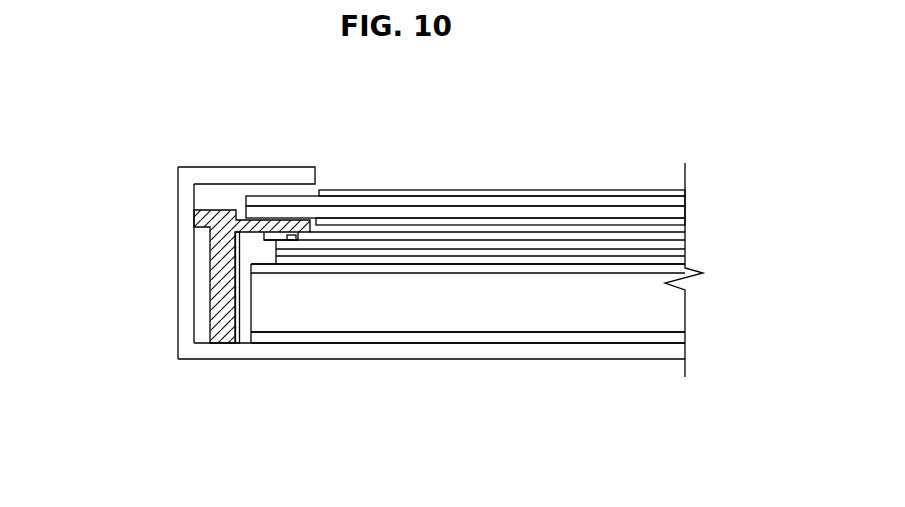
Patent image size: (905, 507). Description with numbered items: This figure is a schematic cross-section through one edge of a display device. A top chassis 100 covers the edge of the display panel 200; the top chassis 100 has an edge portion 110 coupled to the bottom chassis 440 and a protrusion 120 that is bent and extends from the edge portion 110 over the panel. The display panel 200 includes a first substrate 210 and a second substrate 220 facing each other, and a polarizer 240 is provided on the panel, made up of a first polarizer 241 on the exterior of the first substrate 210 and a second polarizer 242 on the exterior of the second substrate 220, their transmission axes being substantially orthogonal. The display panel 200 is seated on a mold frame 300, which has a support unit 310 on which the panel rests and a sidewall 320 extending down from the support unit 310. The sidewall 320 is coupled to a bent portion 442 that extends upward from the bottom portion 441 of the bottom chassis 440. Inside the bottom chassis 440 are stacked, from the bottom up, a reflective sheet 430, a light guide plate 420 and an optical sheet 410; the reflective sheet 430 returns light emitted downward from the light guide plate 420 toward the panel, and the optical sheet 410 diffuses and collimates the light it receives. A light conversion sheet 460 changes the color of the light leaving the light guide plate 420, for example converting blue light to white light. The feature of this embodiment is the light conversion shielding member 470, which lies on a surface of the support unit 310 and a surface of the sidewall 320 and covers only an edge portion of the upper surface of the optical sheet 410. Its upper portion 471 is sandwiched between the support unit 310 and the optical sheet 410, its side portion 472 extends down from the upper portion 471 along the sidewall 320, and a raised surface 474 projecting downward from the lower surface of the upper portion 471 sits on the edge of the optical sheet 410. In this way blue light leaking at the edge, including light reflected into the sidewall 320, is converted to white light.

The top chassis 100 is at (91, 220).
The edge portion 110 is at (190, 213).
The protrusion 120 is at (236, 176).
The display panel 200 is at (587, 119).
The first substrate 210 is at (585, 213).
The second substrate 220 is at (518, 203).
The polarizer 240 is at (428, 119).
The first polarizer 241 is at (430, 220).
The second polarizer 242 is at (360, 195).
The mold frame 300 is at (91, 248).
The support unit 310 is at (258, 227).
The sidewall 320 is at (223, 293).
The optical sheet 410 is at (697, 271).
The light guide plate 420 is at (664, 310).
The reflective sheet 430 is at (664, 345).
The bottom chassis 440 is at (91, 328).
The bottom portion 441 is at (241, 348).
The bent portion 442 is at (201, 319).
The light conversion sheet 460 is at (480, 268).
The light conversion shielding member 470 is at (371, 428).
The upper portion 471 is at (293, 240).
The side portion 472 is at (238, 246).
The raised surface 474 is at (284, 240).